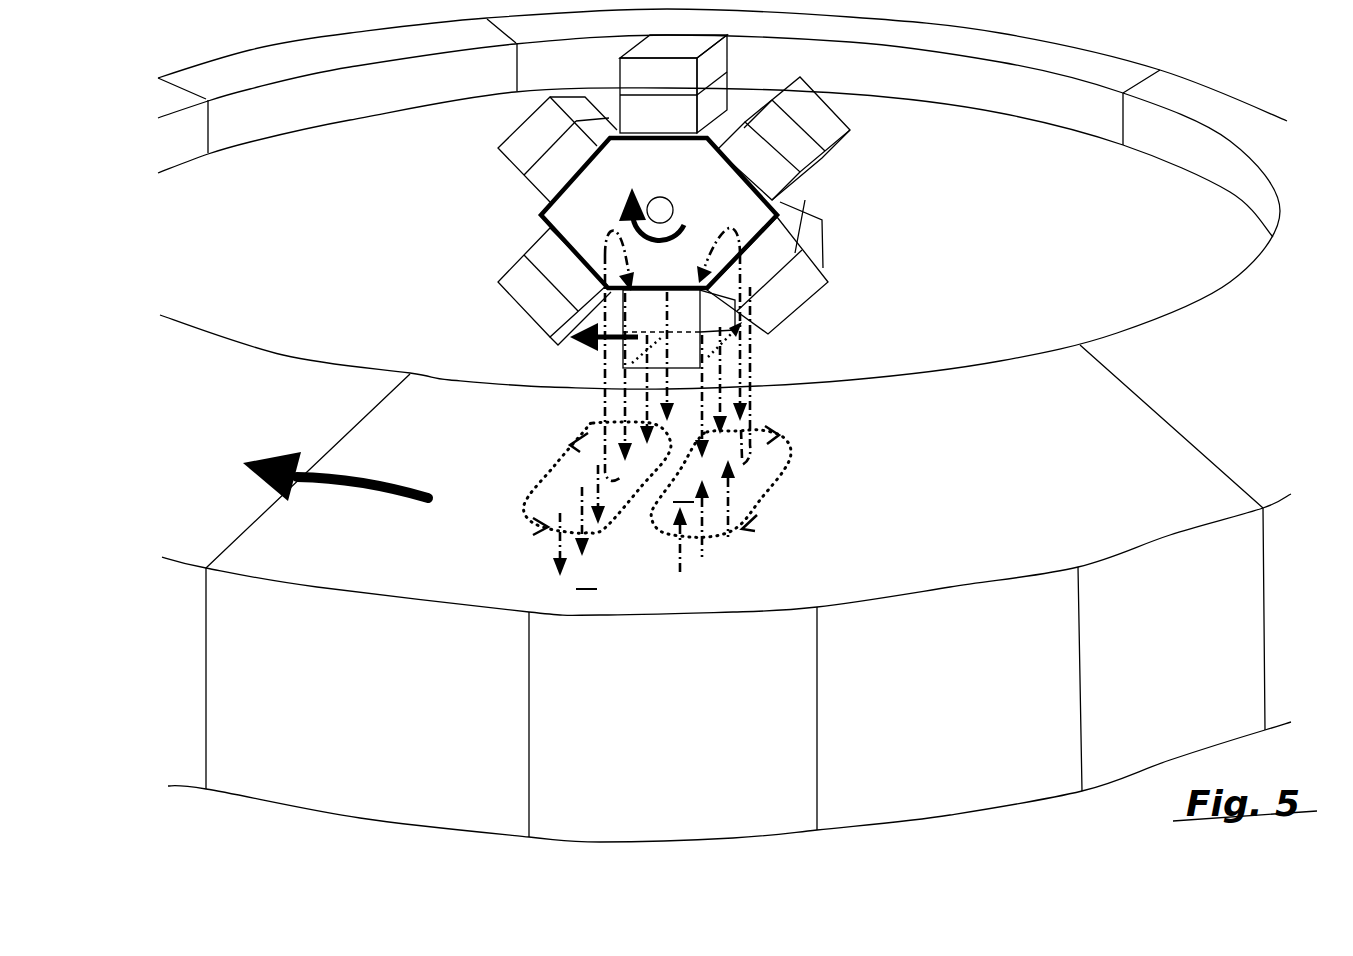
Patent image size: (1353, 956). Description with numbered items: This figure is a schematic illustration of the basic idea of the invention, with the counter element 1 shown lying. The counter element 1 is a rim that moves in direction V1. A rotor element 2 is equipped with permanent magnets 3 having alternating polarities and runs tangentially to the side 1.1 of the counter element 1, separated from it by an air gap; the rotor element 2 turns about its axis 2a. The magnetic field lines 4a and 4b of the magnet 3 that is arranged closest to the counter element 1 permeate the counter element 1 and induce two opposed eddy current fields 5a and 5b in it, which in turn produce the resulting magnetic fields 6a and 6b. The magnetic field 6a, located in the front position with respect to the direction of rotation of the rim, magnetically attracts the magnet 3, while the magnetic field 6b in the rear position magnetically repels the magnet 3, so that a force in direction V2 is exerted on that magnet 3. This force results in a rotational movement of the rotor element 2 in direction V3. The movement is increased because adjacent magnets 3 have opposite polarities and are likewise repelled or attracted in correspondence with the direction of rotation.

The counter element 1 is at (1116, 342).
The side 1.1 is at (1082, 497).
The rotor element 2 is at (745, 213).
The rotation axis of magnet head 2a is at (670, 200).
The permanent magnets 3 is at (752, 328).
The magnetic field lines 4a is at (603, 395).
The magnetic field lines 4b is at (748, 393).
The eddy current field 5a is at (522, 516).
The eddy current field 5b is at (763, 502).
The magnetic field 6a is at (578, 565).
The magnetic field 6b is at (690, 512).
The direction of movement of the rim V1 is at (335, 475).
The direction of force V2 is at (585, 340).
The direction of rotation V3 is at (620, 206).